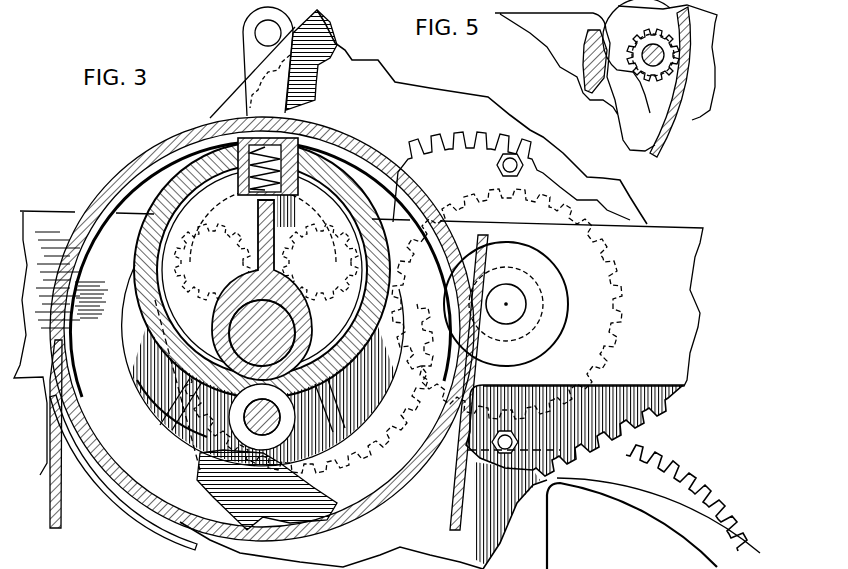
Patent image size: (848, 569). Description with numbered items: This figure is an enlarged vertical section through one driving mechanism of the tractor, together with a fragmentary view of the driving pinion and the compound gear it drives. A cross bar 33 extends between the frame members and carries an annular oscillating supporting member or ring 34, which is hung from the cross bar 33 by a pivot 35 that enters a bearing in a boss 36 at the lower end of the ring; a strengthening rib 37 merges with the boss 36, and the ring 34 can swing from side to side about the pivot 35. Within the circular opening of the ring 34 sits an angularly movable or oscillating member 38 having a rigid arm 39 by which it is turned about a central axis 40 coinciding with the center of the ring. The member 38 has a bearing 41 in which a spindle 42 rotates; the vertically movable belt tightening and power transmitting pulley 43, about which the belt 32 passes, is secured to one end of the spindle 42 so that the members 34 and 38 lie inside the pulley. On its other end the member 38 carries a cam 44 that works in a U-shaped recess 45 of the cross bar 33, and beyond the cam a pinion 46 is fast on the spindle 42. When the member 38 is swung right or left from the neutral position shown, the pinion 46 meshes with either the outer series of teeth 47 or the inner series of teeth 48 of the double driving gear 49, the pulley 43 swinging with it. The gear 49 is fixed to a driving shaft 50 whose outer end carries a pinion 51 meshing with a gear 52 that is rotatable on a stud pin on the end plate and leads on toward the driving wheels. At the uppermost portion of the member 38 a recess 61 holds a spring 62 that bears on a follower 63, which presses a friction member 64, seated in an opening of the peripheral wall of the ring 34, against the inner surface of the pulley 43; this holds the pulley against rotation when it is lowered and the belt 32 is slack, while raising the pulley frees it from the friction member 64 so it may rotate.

In FIG. 3, the belt 32 is at (50, 478).
In FIG. 3, the cross bar 33 is at (52, 240).
In FIG. 5, the cross bar 33 is at (530, 32).
In FIG. 3, the annular oscillating supporting member 34 is at (136, 248).
In FIG. 3, the pivot 35 is at (297, 417).
In FIG. 3, the boss 36 is at (287, 443).
In FIG. 3, the strengthening rib 37 is at (145, 378).
In FIG. 3, the oscillating member 38 is at (135, 283).
In FIG. 3, the arm 39 is at (243, 37).
In FIG. 3, the central axis 40 is at (256, 270).
In FIG. 3, the bearing 41 is at (300, 245).
In FIG. 3, the spindle 42 is at (256, 248).
In FIG. 5, the spindle 42 is at (664, 58).
In FIG. 3, the belt tightening and power transmitting pulley 43 is at (118, 178).
In FIG. 3, the cam 44 is at (216, 262).
In FIG. 5, the cam 44 is at (717, 15).
In FIG. 3, the U-shaped recess 45 is at (343, 240).
In FIG. 5, the U-shaped recess 45 is at (608, 32).
In FIG. 3, the pinion 46 is at (313, 252).
In FIG. 5, the pinion 46 is at (663, 90).
In FIG. 3, the outer series of teeth 47 is at (322, 62).
In FIG. 5, the outer series of teeth 47 is at (672, 143).
In FIG. 3, the inner series of teeth 48 is at (462, 130).
In FIG. 5, the inner series of teeth 48 is at (607, 80).
In FIG. 3, the double driving gear 49 is at (233, 110).
In FIG. 3, the driving shaft 50 is at (523, 297).
In FIG. 3, the pinion 51 is at (622, 325).
In FIG. 3, the gear 52 is at (673, 485).
In FIG. 3, the recess 61 is at (296, 188).
In FIG. 3, the spring 62 is at (248, 196).
In FIG. 3, the follower 63 is at (290, 135).
In FIG. 3, the friction member 64 is at (212, 121).